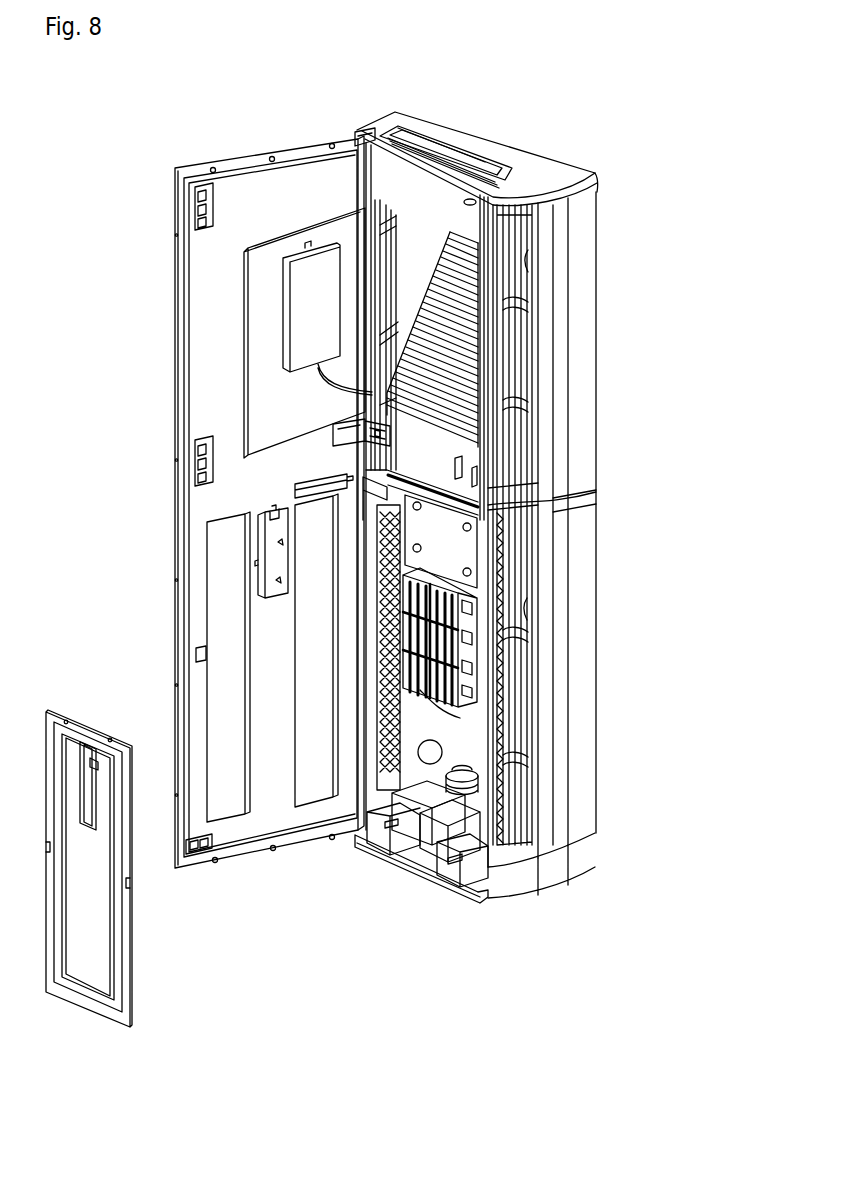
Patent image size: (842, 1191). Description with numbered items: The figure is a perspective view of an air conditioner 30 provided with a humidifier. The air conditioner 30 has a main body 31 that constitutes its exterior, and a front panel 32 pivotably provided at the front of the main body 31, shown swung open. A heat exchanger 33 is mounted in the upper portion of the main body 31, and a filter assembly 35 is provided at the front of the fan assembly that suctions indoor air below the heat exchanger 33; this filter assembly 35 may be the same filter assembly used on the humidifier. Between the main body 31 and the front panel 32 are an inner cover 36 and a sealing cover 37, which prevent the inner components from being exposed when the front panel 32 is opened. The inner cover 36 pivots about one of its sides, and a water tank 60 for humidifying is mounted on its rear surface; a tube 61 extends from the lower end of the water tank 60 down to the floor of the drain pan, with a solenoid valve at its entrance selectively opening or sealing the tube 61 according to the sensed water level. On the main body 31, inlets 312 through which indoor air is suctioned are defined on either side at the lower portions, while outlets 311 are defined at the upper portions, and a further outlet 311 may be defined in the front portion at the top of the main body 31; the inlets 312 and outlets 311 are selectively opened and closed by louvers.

The air conditioner 30 is at (548, 112).
The main body 31 is at (597, 314).
The front panel 32 is at (243, 153).
The heat exchanger 33 is at (458, 330).
The filter assembly 35 is at (437, 713).
The inner cover 36 is at (318, 216).
The sealing cover 37 is at (123, 968).
The water tank 60 is at (292, 260).
The tube 61 is at (320, 390).
The outlet 311 is at (397, 213).
The inlet 312 is at (530, 607).